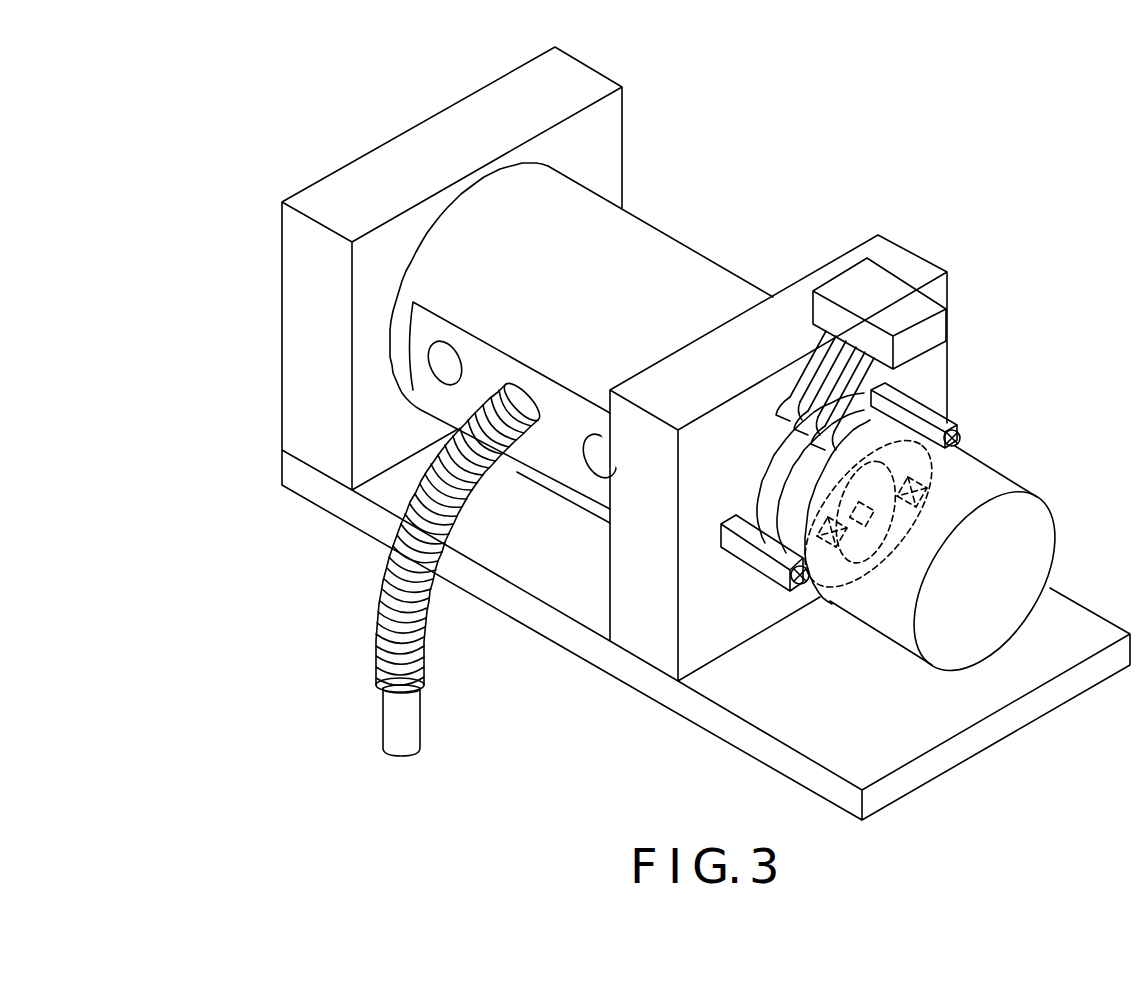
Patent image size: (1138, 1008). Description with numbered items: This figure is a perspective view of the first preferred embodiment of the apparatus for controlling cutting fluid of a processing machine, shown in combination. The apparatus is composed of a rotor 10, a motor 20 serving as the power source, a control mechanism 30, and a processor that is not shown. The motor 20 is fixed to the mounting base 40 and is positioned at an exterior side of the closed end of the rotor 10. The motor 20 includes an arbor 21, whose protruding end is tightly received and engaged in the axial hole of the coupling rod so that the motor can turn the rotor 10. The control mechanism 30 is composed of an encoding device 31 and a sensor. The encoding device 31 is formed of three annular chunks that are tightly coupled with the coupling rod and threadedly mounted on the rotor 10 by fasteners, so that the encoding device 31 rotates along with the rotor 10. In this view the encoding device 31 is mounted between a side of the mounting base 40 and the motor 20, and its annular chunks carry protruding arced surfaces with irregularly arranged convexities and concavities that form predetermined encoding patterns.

The rotor 10 is at (644, 252).
The motor 20 is at (1005, 475).
The arbor 21 is at (870, 497).
The control mechanism 30 is at (888, 293).
The encoding device 31 is at (783, 507).
The mounting base 40 is at (281, 370).